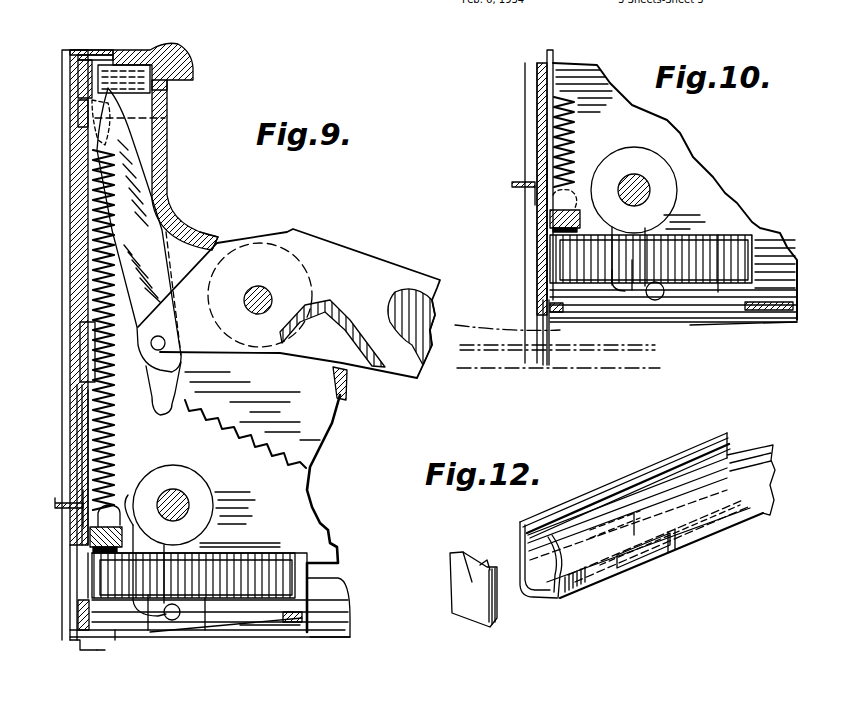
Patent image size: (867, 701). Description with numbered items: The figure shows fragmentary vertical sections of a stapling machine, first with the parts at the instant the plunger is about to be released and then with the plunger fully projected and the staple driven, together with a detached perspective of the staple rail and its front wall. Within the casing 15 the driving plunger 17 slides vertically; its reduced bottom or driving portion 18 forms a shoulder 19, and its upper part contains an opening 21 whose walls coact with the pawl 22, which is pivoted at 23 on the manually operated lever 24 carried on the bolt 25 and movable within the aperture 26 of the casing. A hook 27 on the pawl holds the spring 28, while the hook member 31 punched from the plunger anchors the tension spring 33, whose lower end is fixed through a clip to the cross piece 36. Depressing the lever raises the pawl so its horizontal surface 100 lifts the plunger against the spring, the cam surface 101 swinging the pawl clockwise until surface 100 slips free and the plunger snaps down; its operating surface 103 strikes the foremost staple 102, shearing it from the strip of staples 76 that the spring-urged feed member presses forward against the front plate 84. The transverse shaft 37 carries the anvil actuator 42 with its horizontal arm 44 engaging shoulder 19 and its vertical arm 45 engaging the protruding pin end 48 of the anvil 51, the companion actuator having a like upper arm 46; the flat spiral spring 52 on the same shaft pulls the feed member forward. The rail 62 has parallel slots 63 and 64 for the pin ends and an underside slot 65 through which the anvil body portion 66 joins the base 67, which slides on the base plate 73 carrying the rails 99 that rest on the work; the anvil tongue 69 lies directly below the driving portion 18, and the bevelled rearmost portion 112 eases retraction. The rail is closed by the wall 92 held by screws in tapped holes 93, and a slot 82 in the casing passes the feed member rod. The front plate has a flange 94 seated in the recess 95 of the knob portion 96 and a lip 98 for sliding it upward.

In FIG. 9, the casing 15 is at (327, 428).
In FIG. 9, the driving plunger 17 is at (83, 253).
In FIG. 10, the driving plunger 17 is at (552, 75).
In FIG. 9, the bottom or driving portion of the plunger 18 is at (85, 456).
In FIG. 10, the bottom or driving portion of the plunger 18 is at (547, 278).
In FIG. 9, the shoulder 19 is at (82, 405).
In FIG. 10, the shoulder 19 is at (540, 162).
In FIG. 9, the opening 21 is at (93, 127).
In FIG. 9, the pawl 22 is at (135, 173).
In FIG. 9, the pivot 23 is at (165, 347).
In FIG. 9, the manually operated lever 24 is at (385, 262).
In FIG. 9, the bolt 25 is at (262, 298).
In FIG. 9, the aperture 26 is at (216, 240).
In FIG. 9, the hook 27 is at (178, 392).
In FIG. 9, the spring 28 is at (232, 424).
In FIG. 9, the hook member 31 is at (165, 118).
In FIG. 9, the tension spring 33 is at (95, 368).
In FIG. 10, the tension spring 33 is at (675, 191).
In FIG. 9, the cross piece 36 is at (96, 546).
In FIG. 10, the cross piece 36 is at (550, 228).
In FIG. 9, the shaft 37 is at (175, 503).
In FIG. 10, the shaft 37 is at (652, 185).
In FIG. 9, the anvil actuator 42 is at (205, 500).
In FIG. 10, the anvil actuator 42 is at (665, 160).
In FIG. 10, the upper arm of anvil actuator 44 is at (555, 205).
In FIG. 9, the lower arm of anvil actuator 45 is at (148, 625).
In FIG. 10, the lower arm of anvil actuator 45 is at (627, 292).
In FIG. 9, the upper arm of anvil actuator 46 is at (118, 505).
In FIG. 9, the protruding end of pin 48 is at (172, 620).
In FIG. 10, the protruding end of pin 48 is at (652, 298).
In FIG. 9, the anvil 51 is at (104, 652).
In FIG. 10, the anvil 51 is at (674, 322).
In FIG. 9, the flat spiral spring 52 is at (245, 544).
In FIG. 10, the flat spiral spring 52 is at (690, 222).
In FIG. 9, the staple-carrying member or rail 62 is at (305, 590).
In FIG. 10, the staple-carrying member or rail 62 is at (786, 258).
In FIG. 12, the staple-carrying member or rail 62 is at (538, 522).
In FIG. 12, the slot 63 is at (665, 550).
In FIG. 9, the slot 64 is at (208, 615).
In FIG. 10, the slot 64 is at (612, 270).
In FIG. 12, the slot 64 is at (607, 530).
In FIG. 12, the slot 65 is at (553, 588).
In FIG. 9, the body portion of the anvil 66 is at (118, 640).
In FIG. 10, the body portion of the anvil 66 is at (762, 325).
In FIG. 9, the base of the anvil 67 is at (238, 636).
In FIG. 10, the base of the anvil 67 is at (718, 332).
In FIG. 9, the tongue or lip 69 is at (85, 648).
In FIG. 9, the base plate 73 is at (318, 637).
In FIG. 10, the base plate 73 is at (797, 328).
In FIG. 10, the strip of staples 76 is at (728, 240).
In FIG. 9, the slot 82 is at (338, 560).
In FIG. 9, the front plate 84 is at (80, 330).
In FIG. 10, the front plate 84 is at (537, 96).
In FIG. 9, the wall 92 is at (85, 615).
In FIG. 12, the wall 92 is at (470, 605).
In FIG. 12, the tapped holes 93 is at (486, 564).
In FIG. 9, the flange 94 is at (100, 50).
In FIG. 9, the recess 95 is at (128, 50).
In FIG. 9, the top or knob portion 96 is at (187, 63).
In FIG. 9, the lip 98 is at (57, 500).
In FIG. 10, the lip 98 is at (516, 188).
In FIG. 9, the rails or props 99 is at (350, 633).
In FIG. 9, the horizontally disposed surface of the pawl 100 is at (152, 86).
In FIG. 9, the cam surface of the pawl 101 is at (79, 115).
In FIG. 9, the first or foremost staple 102 is at (92, 580).
In FIG. 10, the first or foremost staple 102 is at (547, 340).
In FIG. 9, the bottom or operating surface of the plunger 103 is at (90, 533).
In FIG. 10, the bottom or operating surface of the plunger 103 is at (535, 326).
In FIG. 9, the rearmost portion of the bottom of the anvil 112 is at (272, 645).